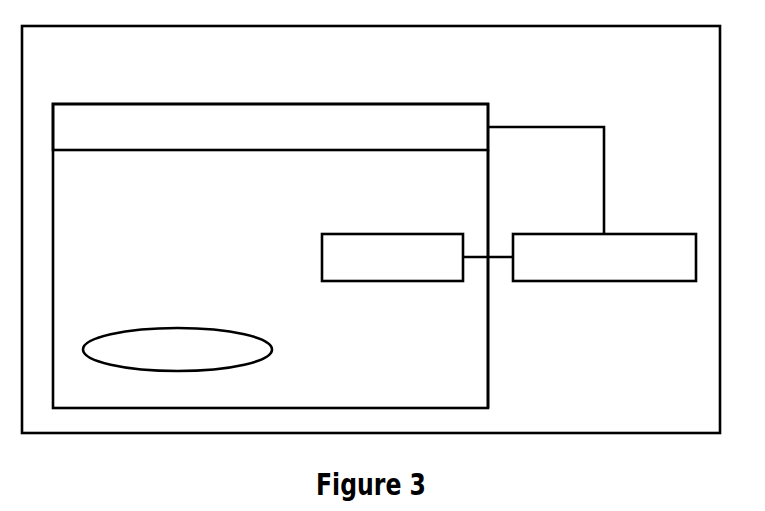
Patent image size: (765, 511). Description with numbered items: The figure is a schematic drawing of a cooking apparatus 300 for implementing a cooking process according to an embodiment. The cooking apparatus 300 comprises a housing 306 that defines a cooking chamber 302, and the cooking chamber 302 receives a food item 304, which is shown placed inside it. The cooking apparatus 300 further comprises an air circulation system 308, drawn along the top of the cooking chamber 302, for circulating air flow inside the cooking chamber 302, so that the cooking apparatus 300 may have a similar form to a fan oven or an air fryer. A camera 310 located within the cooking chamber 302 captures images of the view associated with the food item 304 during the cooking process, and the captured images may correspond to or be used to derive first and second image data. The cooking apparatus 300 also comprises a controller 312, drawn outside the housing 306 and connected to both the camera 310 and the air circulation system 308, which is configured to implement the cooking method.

The cooking apparatus 300 is at (389, 63).
The cooking chamber 302 is at (288, 187).
The food item 304 is at (195, 363).
The housing 306 is at (488, 371).
The air circulation system 308 is at (288, 142).
The camera 310 is at (410, 271).
The controller 312 is at (622, 271).